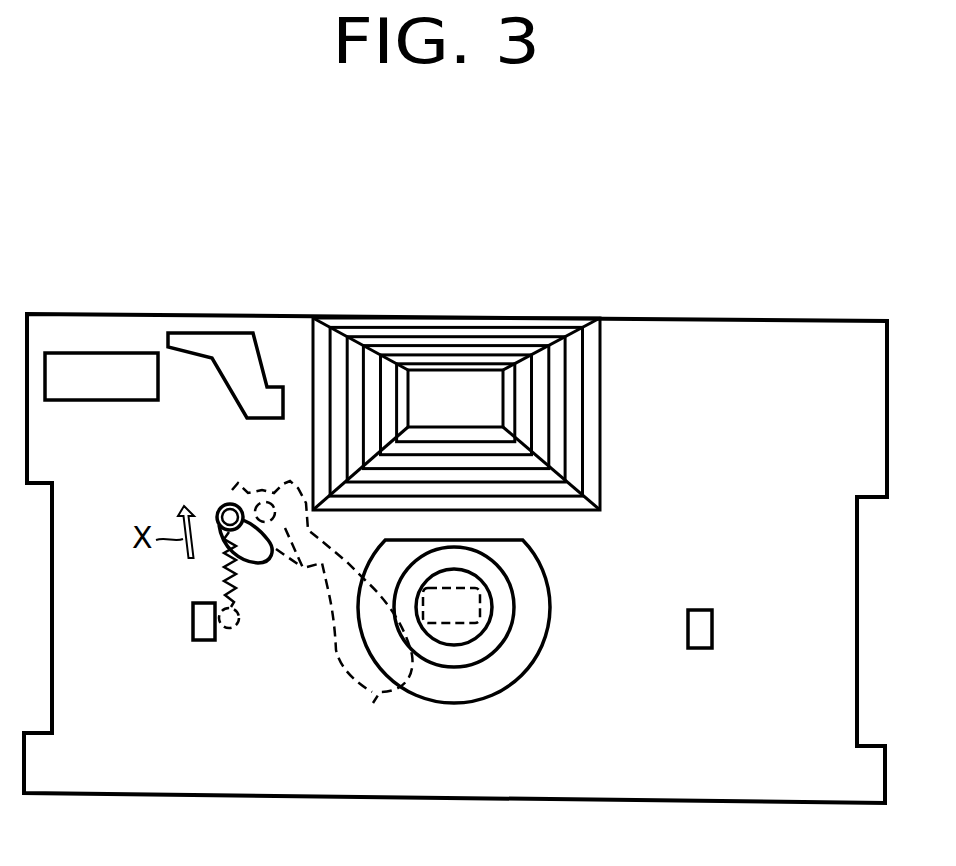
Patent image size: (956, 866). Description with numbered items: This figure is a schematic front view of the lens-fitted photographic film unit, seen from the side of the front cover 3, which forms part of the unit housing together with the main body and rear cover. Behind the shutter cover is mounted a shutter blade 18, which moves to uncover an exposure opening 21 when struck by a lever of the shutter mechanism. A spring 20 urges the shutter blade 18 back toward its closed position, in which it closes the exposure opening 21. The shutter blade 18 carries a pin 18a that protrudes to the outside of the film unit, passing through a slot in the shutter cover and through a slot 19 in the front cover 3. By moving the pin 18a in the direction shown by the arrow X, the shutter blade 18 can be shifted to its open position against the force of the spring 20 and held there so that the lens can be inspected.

The front cover 3 is at (653, 322).
The shutter blade 18 is at (373, 703).
The pin 18a is at (222, 505).
The slot 19 is at (262, 560).
The spring 20 is at (213, 592).
The exposure opening 21 is at (480, 600).